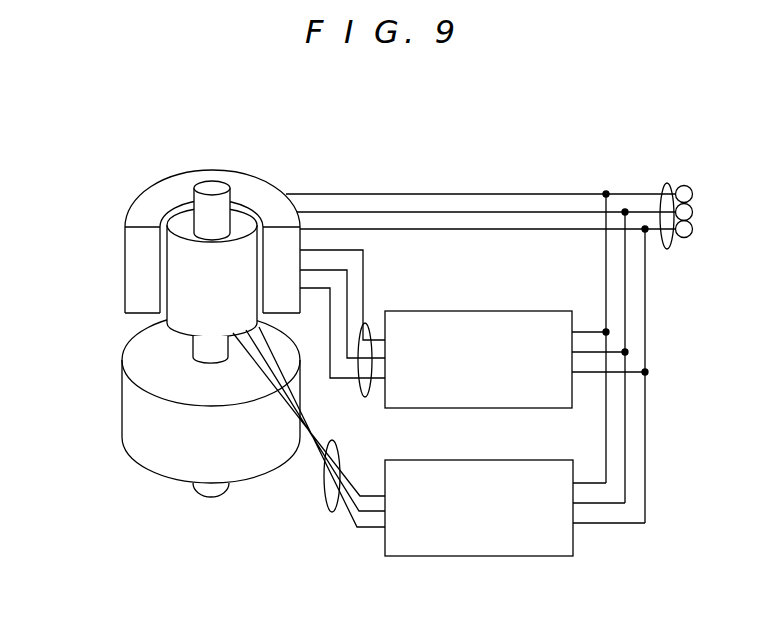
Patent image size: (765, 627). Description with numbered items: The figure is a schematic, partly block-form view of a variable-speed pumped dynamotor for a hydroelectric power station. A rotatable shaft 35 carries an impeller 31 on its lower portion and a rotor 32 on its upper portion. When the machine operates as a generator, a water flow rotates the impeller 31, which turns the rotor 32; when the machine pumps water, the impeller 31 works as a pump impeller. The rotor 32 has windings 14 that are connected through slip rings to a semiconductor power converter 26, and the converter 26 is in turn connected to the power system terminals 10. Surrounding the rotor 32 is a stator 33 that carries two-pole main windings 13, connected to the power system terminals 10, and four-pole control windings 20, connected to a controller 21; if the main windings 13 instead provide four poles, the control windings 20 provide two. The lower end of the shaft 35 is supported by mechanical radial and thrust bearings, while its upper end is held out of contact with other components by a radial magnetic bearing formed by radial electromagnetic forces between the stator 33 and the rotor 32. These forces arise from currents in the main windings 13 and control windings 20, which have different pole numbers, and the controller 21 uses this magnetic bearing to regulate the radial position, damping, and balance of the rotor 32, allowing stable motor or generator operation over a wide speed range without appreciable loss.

The power system terminals 10 is at (697, 227).
The main windings 13 is at (382, 193).
The windings 14 is at (310, 462).
The control windings 20 is at (365, 271).
The controller 21 is at (488, 311).
The semiconductor power converter 26 is at (478, 557).
The impeller 31 is at (130, 413).
The rotor 32 is at (250, 208).
The stator 33 is at (203, 170).
The rotatable shaft 35 is at (158, 182).